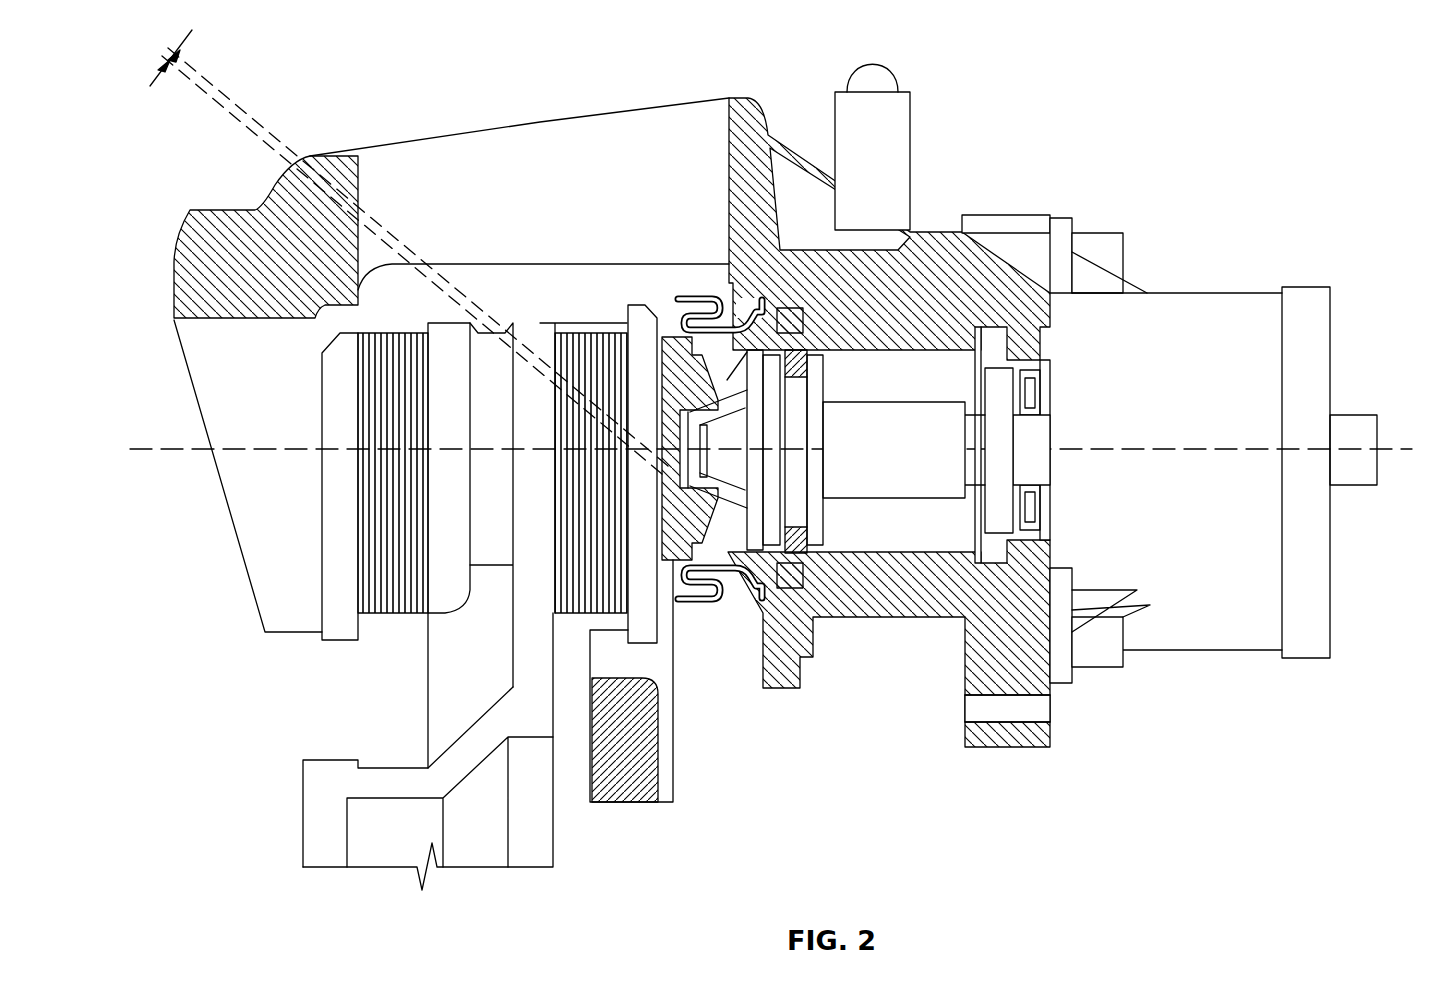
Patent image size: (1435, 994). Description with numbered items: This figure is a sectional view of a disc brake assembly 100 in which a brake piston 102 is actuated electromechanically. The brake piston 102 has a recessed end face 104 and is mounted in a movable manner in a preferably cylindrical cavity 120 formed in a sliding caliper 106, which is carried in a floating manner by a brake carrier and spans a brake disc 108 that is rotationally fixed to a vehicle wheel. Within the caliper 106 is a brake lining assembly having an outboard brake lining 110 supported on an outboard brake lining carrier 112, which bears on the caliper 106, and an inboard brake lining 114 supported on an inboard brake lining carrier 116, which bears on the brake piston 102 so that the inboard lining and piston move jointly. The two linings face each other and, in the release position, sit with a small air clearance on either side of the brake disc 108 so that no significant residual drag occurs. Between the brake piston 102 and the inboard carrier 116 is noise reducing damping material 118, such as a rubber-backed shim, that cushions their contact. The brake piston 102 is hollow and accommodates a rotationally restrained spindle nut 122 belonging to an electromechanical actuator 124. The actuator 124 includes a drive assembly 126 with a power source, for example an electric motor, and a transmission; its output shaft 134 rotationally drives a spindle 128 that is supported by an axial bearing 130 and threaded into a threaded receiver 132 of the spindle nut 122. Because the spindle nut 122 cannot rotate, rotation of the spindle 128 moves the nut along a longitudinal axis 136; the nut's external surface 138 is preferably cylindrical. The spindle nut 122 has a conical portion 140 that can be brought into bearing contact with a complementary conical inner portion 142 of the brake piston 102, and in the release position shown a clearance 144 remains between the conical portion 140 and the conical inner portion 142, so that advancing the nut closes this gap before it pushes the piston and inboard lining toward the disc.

The disc brake assembly 100 is at (1212, 148).
The brake piston 102 is at (905, 245).
The recessed end face 104 is at (650, 534).
The sliding caliper 106 is at (403, 163).
The brake disc 108 is at (452, 698).
The outboard brake lining 110 is at (387, 480).
The outboard brake lining carrier 112 is at (333, 556).
The inboard brake lining 114 is at (583, 330).
The inboard brake lining carrier 116 is at (640, 318).
The noise reducing damping material 118 is at (667, 605).
The cylindrical cavity 120 is at (990, 343).
The spindle nut 122 is at (958, 394).
The electromechanical actuator 124 is at (1215, 292).
The drive assembly 126 is at (1213, 643).
The spindle 128 is at (992, 488).
The axial bearing 130 is at (1030, 362).
The threaded receiver 132 is at (894, 450).
The output shaft 134 is at (1043, 432).
The longitudinal axis 136 is at (173, 456).
The external surface 138 is at (930, 497).
The conical portion 140 is at (722, 417).
The conical inner portion 142 is at (683, 322).
The clearance 144 is at (197, 45).